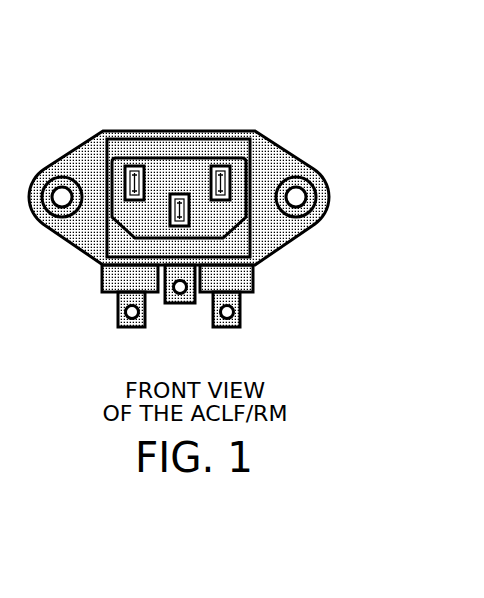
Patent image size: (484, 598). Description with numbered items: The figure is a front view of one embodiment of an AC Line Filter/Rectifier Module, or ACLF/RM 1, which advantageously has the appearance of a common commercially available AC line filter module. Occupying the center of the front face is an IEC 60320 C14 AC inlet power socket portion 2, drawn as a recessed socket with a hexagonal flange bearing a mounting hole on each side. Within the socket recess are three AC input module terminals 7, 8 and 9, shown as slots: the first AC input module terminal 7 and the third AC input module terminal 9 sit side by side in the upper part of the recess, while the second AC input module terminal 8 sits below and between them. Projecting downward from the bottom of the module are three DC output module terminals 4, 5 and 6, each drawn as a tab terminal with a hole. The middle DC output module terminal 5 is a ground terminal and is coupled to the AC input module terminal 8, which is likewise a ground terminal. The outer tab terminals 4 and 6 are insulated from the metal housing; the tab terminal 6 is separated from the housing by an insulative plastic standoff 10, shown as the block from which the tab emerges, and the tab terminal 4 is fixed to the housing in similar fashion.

The AC Line Filter/Rectifier Module (ACLF/RM) 1 is at (296, 52).
The AC inlet power socket portion 2 is at (66, 159).
The DC output module terminal 4 is at (132, 329).
The DC output module terminal 5 is at (181, 305).
The DC output module terminal 6 is at (227, 329).
The AC input module terminal 7 is at (119, 163).
The AC input module terminal 8 is at (182, 190).
The AC input module terminal 9 is at (237, 163).
The insulative plastic standoff 10 is at (255, 278).